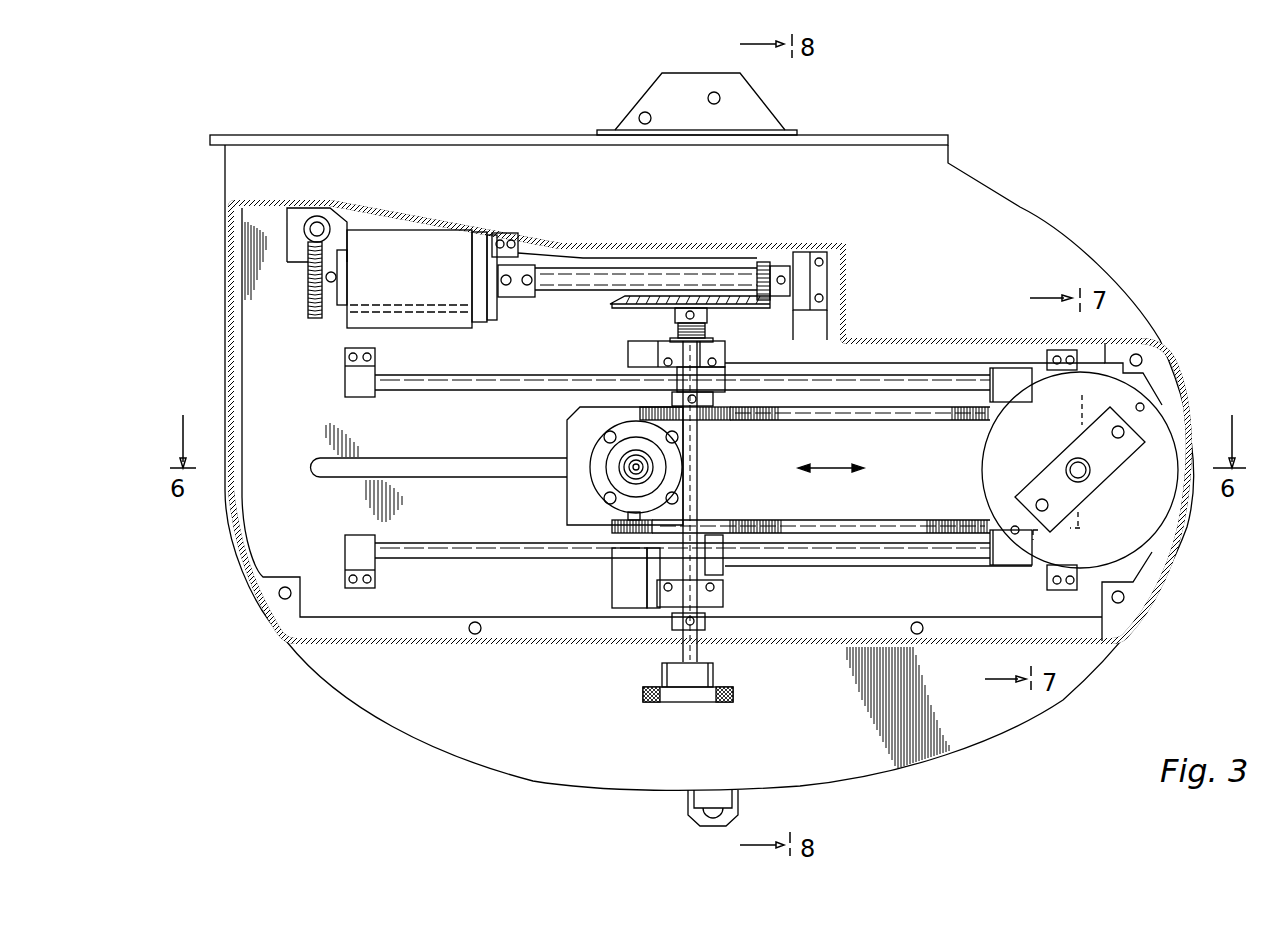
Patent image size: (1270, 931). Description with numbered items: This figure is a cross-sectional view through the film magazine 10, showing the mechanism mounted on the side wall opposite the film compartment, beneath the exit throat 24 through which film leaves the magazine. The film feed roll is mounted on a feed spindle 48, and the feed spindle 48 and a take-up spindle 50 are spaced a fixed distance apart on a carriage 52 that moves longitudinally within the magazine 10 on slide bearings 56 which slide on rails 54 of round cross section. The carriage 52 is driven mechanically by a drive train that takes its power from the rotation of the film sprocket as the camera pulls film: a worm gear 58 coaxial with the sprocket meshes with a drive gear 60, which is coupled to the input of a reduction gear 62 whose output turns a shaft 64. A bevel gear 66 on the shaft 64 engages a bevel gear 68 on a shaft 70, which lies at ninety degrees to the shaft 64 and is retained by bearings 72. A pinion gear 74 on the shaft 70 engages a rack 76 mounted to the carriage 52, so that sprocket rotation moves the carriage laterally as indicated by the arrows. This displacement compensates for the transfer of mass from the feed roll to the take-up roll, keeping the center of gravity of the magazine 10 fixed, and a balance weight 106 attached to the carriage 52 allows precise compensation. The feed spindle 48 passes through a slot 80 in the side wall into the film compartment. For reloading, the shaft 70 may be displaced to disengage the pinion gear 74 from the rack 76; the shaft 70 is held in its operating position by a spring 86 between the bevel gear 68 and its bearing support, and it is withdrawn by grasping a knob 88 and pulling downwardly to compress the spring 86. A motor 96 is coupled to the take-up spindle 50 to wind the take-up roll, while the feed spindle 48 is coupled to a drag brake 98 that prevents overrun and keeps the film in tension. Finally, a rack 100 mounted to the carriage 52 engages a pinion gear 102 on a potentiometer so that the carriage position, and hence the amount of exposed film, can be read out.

The film magazine 10 is at (1022, 208).
The exit throat 24 is at (648, 100).
The feed spindle 48 is at (636, 467).
The take-up spindle 50 is at (1082, 480).
The carriage 52 is at (578, 420).
The rails 54 is at (509, 392).
The slide bearings 56 is at (715, 385).
The worm gear 58 is at (303, 226).
The drive gear 60 is at (304, 302).
The reduction gear 62 is at (420, 305).
The shaft 64 is at (562, 292).
The bevel gear 66 is at (761, 262).
The bevel gear 68 is at (612, 306).
The shaft 70 is at (698, 482).
The bearings 72 is at (657, 348).
The pinion gear 74 is at (701, 421).
The rack 76 is at (855, 421).
The slot 80 is at (406, 462).
The spring 86 is at (706, 334).
The knob 88 is at (716, 695).
The motor 96 is at (1166, 430).
The drag brake 98 is at (614, 478).
The rack 100 is at (830, 530).
The pinion gear 102 is at (614, 525).
The weight 106 is at (1116, 450).